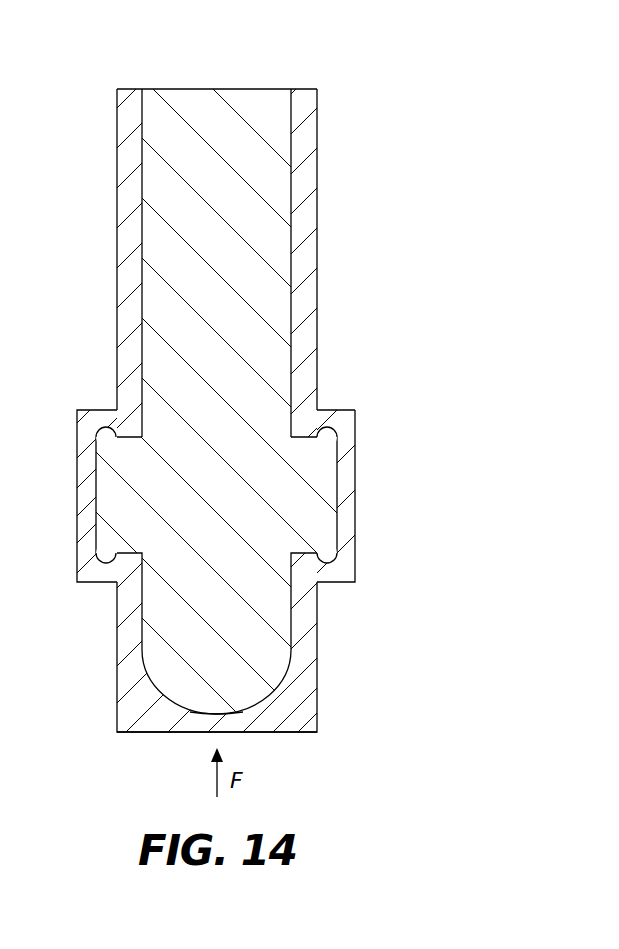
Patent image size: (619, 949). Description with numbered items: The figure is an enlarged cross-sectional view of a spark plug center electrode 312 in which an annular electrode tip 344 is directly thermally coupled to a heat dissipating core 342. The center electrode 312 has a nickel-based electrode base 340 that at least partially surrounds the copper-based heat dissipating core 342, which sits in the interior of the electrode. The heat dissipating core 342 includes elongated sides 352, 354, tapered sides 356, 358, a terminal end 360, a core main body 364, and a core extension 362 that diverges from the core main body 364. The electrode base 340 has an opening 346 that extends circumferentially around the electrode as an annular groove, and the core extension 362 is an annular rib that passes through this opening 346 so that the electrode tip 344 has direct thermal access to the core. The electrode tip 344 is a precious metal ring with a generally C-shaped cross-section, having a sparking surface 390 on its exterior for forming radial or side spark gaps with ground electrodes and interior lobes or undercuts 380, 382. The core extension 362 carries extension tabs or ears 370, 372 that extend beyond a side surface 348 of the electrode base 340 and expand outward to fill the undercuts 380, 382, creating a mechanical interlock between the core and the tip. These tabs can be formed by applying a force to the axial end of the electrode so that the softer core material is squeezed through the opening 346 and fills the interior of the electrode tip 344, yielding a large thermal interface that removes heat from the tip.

The spark plug center electrode 312 is at (315, 56).
The electrode base 340 is at (307, 640).
The heat dissipating core 342 is at (256, 222).
The electrode tip 344 is at (343, 410).
The opening 346 is at (122, 446).
The side surface 348 is at (318, 117).
The elongated side 352 is at (143, 193).
The elongated side 354 is at (291, 265).
The tapered side 356 is at (155, 682).
The tapered side 358 is at (282, 680).
The terminal end 360 is at (198, 713).
The core extension 362 is at (322, 478).
The core main body 364 is at (197, 605).
The extension tab 370 is at (327, 436).
The undercut 380 is at (327, 436).
The extension tab 372 is at (328, 548).
The undercut 382 is at (328, 548).
The sparking surface 390 is at (80, 488).